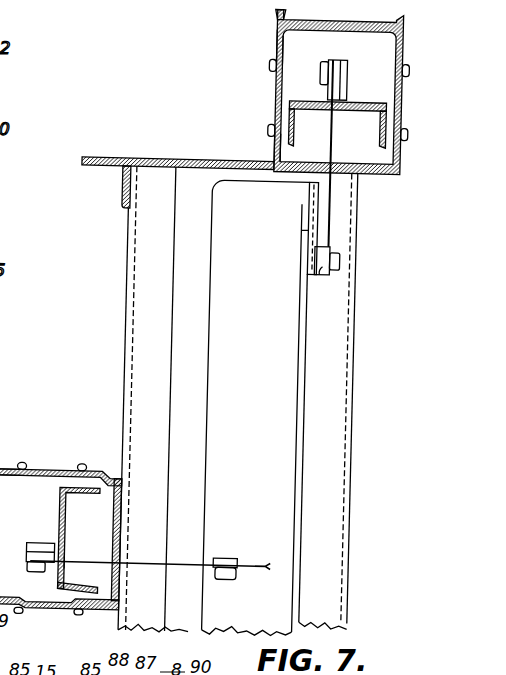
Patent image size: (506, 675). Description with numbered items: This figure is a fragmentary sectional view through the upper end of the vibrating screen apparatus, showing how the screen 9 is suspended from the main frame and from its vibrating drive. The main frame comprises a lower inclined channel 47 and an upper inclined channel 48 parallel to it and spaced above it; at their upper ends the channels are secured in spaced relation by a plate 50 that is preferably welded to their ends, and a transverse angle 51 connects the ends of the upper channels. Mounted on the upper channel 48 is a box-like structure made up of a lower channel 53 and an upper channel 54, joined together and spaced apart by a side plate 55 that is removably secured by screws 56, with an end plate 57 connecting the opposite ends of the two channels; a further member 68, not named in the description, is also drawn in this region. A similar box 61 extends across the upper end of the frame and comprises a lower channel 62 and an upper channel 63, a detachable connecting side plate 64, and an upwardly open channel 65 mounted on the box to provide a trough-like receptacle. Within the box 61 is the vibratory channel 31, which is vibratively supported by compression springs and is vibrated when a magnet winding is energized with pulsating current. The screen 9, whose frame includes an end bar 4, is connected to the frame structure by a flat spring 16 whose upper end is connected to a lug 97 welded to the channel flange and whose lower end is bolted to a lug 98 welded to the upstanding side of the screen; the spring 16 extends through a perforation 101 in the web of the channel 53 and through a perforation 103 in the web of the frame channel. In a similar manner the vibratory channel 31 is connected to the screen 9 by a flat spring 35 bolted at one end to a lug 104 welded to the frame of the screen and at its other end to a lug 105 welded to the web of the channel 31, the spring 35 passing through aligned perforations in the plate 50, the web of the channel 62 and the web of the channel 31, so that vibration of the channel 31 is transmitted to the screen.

The end bar 4 is at (308, 207).
The screen 9 is at (255, 408).
The flat spring 16 is at (97, 564).
The vibratory channel 31 is at (358, 102).
The flat spring 35 is at (329, 131).
The lower inclined channel 47 is at (359, 406).
The upper inclined channel 48 is at (133, 394).
The plate 50 is at (193, 158).
The transverse angle 51 is at (109, 157).
The lower channel 53 is at (114, 480).
The upper channel 54 is at (12, 473).
The side plate 55 is at (63, 472).
The screw 56 is at (13, 222).
The end plate 57 is at (60, 557).
The box 61 is at (296, 79).
The lower channel 62 is at (275, 147).
The upper channel 63 is at (273, 42).
The side plate 64 is at (269, 101).
The upwardly open channel 65 is at (273, 18).
The bracket 68 is at (74, 526).
The lug 97 is at (52, 547).
The lug 98 is at (259, 547).
The perforation 101 is at (131, 562).
The perforation 103 is at (72, 562).
The lug 104 is at (318, 258).
The lug 105 is at (343, 70).